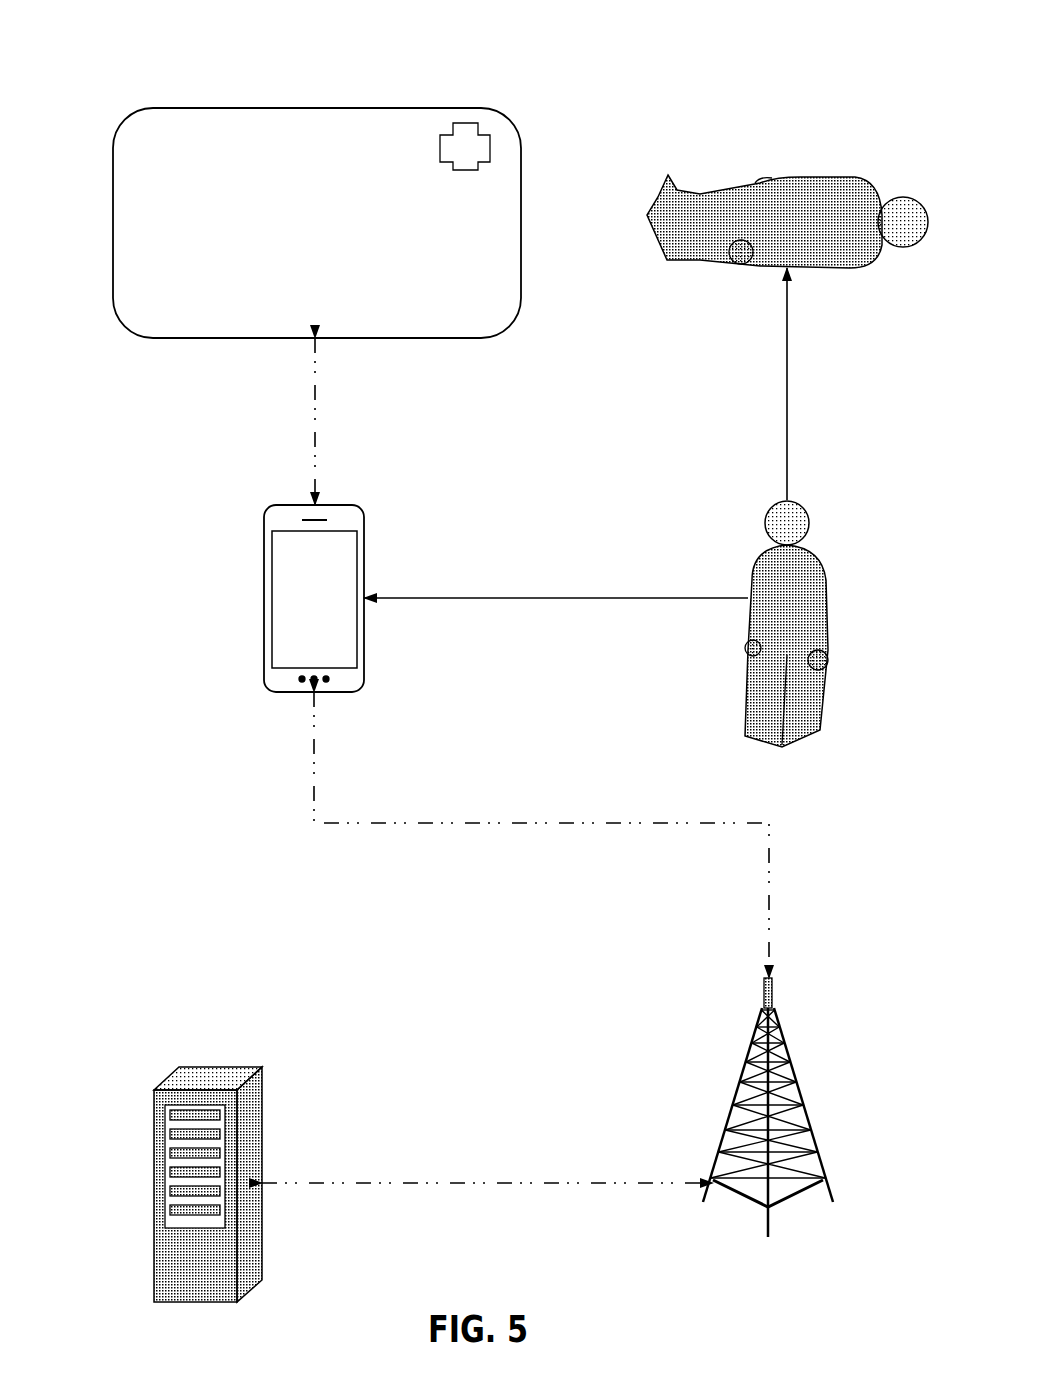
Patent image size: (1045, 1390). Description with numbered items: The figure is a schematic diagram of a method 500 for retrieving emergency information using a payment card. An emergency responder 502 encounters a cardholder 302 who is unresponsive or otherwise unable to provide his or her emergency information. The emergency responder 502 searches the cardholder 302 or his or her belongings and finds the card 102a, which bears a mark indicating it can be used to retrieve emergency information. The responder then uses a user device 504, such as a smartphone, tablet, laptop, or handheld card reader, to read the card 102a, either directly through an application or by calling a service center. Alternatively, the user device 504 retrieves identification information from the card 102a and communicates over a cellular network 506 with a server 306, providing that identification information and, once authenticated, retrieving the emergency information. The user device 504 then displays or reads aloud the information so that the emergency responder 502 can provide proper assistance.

The method 500 is at (130, 36).
The card 102a is at (305, 108).
The cardholder 302 is at (838, 177).
The emergency responder 502 is at (828, 560).
The user device 504 is at (264, 558).
The cellular network 506 is at (797, 1088).
The server 306 is at (208, 1067).